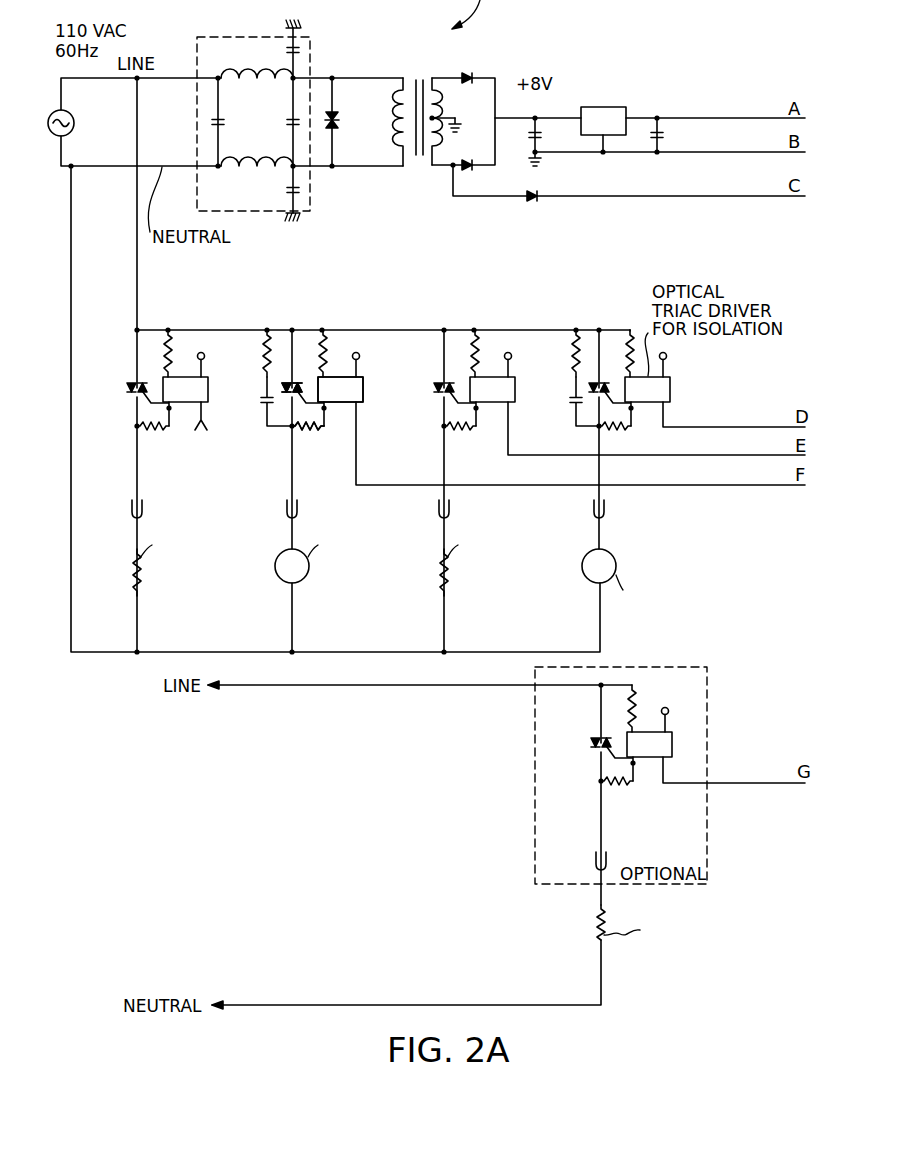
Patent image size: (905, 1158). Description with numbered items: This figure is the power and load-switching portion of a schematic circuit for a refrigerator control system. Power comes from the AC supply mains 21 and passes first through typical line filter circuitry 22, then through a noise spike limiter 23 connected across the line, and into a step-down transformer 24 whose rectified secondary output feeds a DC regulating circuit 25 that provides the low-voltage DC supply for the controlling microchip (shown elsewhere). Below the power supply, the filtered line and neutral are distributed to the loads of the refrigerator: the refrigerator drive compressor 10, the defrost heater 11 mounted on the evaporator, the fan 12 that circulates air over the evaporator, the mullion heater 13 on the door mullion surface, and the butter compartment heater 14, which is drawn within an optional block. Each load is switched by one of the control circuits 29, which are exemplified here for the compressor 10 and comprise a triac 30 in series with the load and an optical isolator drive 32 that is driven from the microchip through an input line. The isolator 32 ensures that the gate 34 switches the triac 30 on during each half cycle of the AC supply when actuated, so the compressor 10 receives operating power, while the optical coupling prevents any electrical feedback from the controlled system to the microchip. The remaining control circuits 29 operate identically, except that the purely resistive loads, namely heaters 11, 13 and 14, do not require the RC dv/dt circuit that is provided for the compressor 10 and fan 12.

The refrigerator drive compressor 10 is at (278, 574).
The defrost heater 11 is at (437, 582).
The fan 12 is at (584, 574).
The mullion heater 13 is at (135, 582).
The butter compartment heater 14 is at (597, 928).
The AC supply mains 21 is at (74, 122).
The line filter circuitry 22 is at (312, 62).
The noise spike limiter 23 is at (340, 120).
The step-down transformer 24 is at (417, 75).
The DC regulating circuit 25 is at (593, 107).
The control circuits 29 is at (383, 301).
The triac 30 is at (287, 398).
The optical isolator drive 32 is at (340, 376).
The gate 34 is at (315, 410).